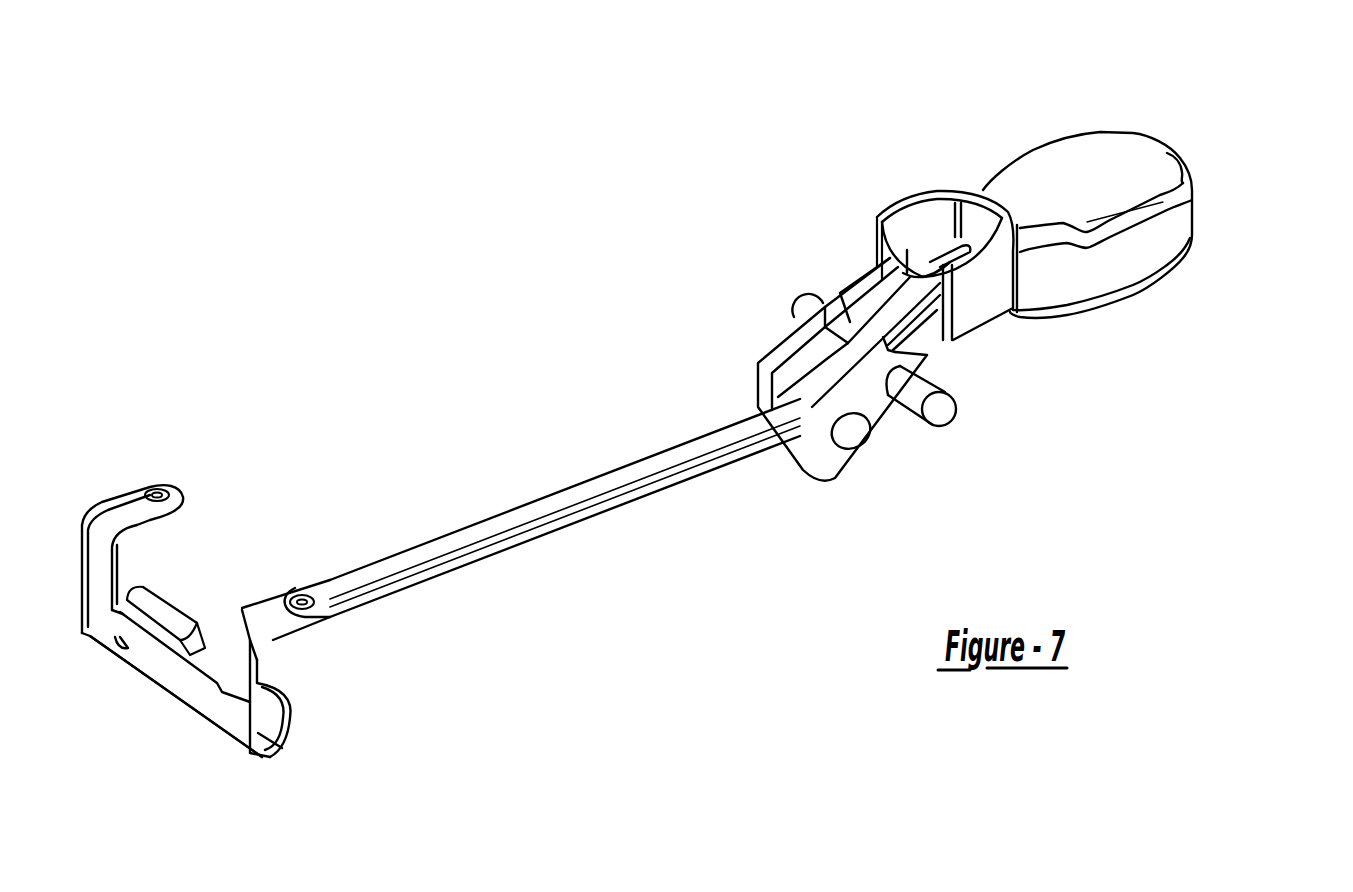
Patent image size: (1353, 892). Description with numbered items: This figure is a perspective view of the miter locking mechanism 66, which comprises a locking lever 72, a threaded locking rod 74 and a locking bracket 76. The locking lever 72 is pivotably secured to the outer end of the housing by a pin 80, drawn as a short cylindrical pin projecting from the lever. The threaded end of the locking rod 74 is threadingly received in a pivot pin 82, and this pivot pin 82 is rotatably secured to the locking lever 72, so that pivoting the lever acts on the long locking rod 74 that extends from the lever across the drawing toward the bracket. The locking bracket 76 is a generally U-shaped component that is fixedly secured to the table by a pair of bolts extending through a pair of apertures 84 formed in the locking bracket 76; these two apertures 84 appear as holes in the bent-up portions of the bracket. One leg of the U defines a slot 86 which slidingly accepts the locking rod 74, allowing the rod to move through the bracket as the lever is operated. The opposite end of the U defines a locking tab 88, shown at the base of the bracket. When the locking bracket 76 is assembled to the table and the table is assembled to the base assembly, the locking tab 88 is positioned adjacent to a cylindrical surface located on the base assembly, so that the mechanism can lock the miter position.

The miter locking mechanism 66 is at (769, 209).
The locking lever 72 is at (1180, 227).
The threaded locking rod 74 is at (507, 543).
The locking bracket 76 is at (292, 713).
The pin 80 is at (947, 413).
The pivot pin 82 is at (853, 432).
The apertures 84 is at (160, 494).
The slot 86 is at (197, 623).
The locking tab 88 is at (180, 667).